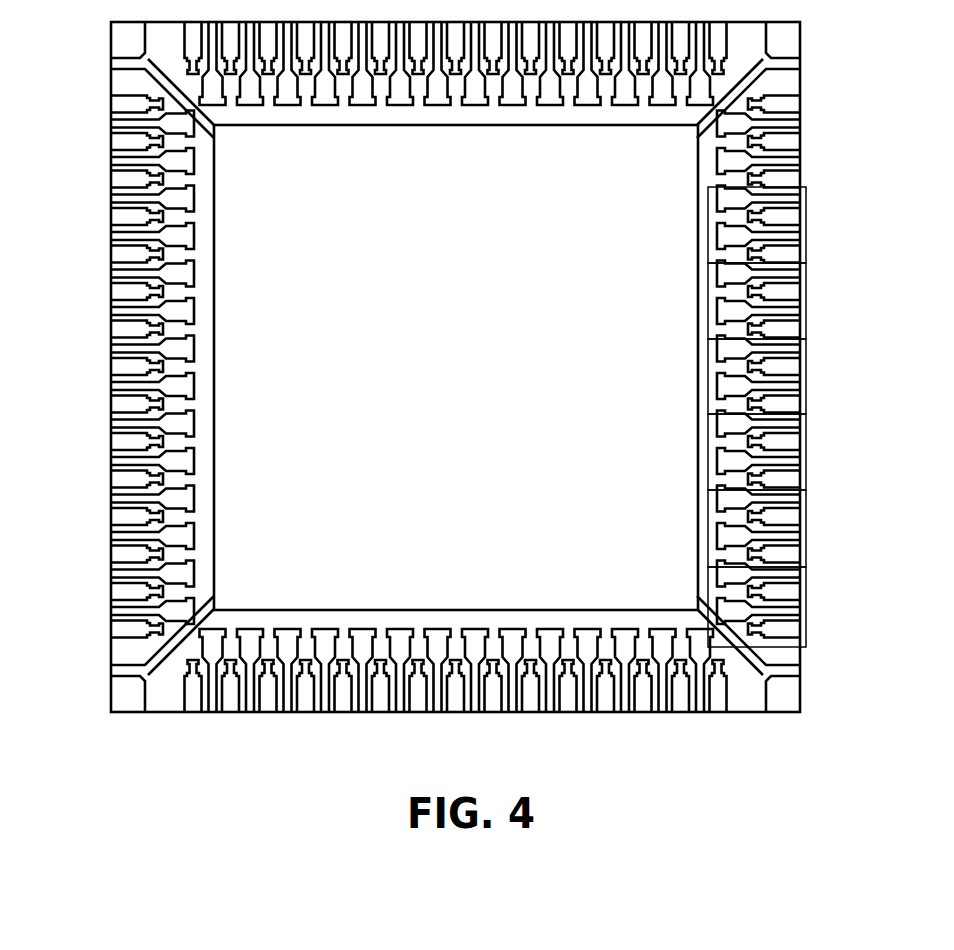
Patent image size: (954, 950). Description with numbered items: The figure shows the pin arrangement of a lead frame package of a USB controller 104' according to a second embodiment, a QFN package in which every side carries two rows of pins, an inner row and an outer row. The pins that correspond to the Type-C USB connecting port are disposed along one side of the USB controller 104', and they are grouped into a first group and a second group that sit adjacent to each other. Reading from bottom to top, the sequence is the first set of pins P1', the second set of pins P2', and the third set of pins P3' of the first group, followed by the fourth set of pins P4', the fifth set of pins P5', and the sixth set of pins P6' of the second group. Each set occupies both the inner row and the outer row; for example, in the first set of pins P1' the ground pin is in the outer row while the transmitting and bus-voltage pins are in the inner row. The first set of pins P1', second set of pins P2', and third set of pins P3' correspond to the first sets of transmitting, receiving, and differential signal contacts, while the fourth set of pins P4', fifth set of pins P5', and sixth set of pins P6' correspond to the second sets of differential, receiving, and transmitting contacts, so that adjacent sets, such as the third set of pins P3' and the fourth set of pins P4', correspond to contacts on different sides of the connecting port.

The USB controller 104' is at (522, 365).
The first set of pins P1' is at (796, 596).
The second set of pins P2' is at (796, 519).
The third set of pins P3' is at (796, 449).
The fourth set of pins P4' is at (796, 376).
The fifth set of pins P5' is at (796, 301).
The sixth set of pins P6' is at (796, 225).